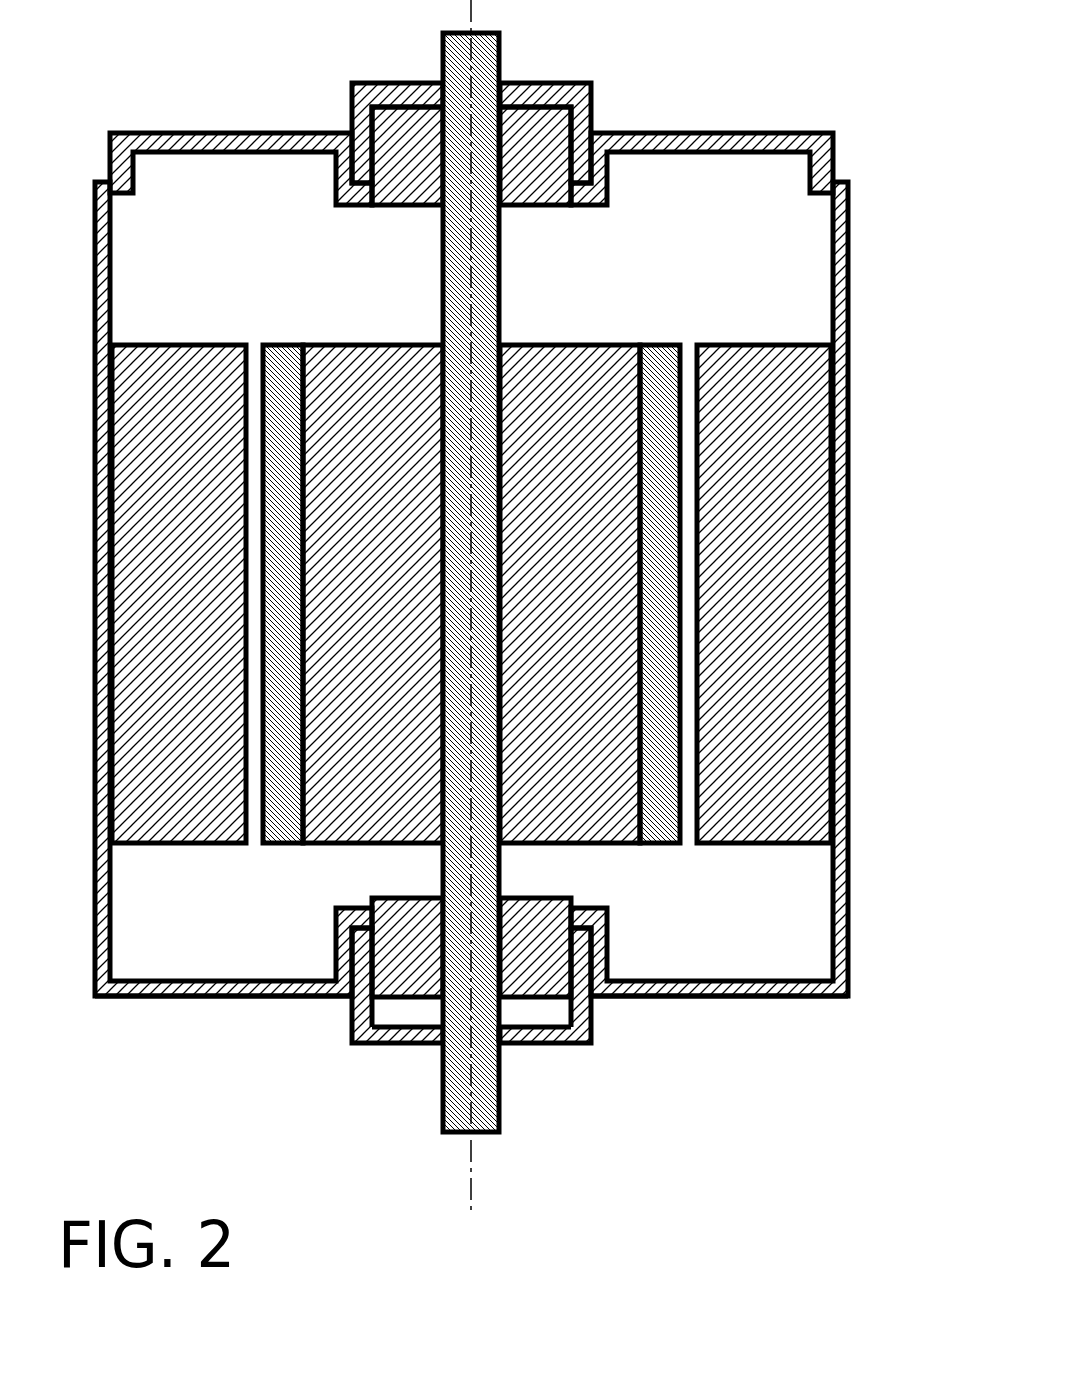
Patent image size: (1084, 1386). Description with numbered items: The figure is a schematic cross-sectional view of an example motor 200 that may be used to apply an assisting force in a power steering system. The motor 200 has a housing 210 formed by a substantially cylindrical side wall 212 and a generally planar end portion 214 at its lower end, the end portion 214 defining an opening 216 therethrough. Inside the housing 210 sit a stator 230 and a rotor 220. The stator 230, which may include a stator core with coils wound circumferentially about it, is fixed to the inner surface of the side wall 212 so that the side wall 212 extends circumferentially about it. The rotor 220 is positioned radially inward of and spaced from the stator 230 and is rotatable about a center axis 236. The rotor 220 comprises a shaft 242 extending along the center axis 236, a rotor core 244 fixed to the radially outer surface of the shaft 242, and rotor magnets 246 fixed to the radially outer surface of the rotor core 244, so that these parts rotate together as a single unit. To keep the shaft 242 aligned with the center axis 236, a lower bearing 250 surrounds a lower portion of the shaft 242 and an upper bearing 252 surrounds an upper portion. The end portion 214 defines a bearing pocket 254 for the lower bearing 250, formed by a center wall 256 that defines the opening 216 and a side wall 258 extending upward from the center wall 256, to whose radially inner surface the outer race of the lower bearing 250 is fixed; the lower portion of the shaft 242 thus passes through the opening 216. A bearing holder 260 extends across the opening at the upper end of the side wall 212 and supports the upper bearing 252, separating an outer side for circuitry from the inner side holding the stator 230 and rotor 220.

The motor 200 is at (518, 622).
The housing 210 is at (476, 625).
The side wall 212 is at (850, 378).
The end portion 214 is at (640, 995).
The opening 216 is at (505, 1047).
The rotor 220 is at (466, 581).
The stator 230 is at (197, 333).
The center axis 236 is at (482, 1167).
The shaft 242 is at (471, 582).
The rotor core 244 is at (357, 845).
The rotor magnets 246 is at (287, 845).
The lower bearing 250 is at (457, 944).
The upper bearing 252 is at (523, 210).
The bearing pocket 254 is at (542, 1010).
The center wall 256 is at (392, 1047).
The side wall 258 is at (352, 1022).
The bearing holder 260 is at (551, 146).